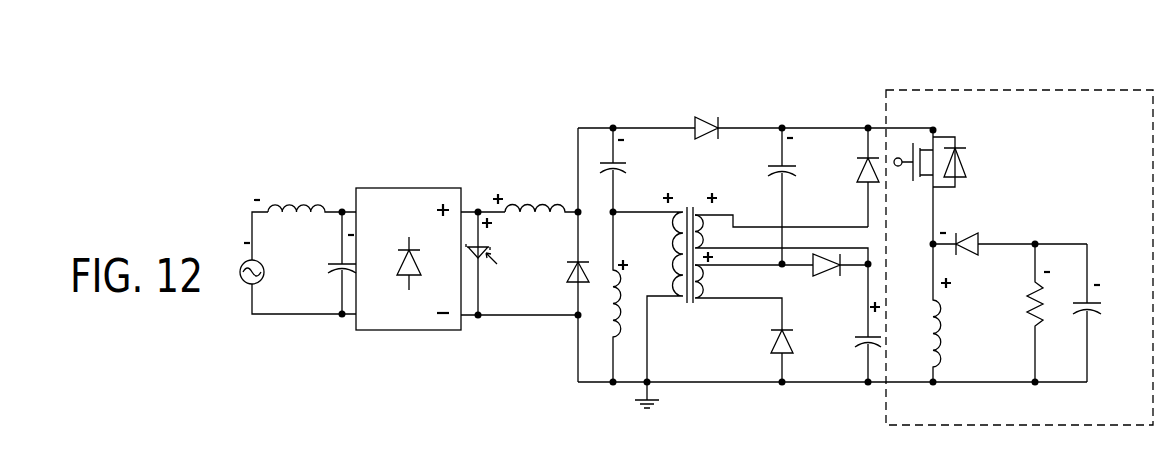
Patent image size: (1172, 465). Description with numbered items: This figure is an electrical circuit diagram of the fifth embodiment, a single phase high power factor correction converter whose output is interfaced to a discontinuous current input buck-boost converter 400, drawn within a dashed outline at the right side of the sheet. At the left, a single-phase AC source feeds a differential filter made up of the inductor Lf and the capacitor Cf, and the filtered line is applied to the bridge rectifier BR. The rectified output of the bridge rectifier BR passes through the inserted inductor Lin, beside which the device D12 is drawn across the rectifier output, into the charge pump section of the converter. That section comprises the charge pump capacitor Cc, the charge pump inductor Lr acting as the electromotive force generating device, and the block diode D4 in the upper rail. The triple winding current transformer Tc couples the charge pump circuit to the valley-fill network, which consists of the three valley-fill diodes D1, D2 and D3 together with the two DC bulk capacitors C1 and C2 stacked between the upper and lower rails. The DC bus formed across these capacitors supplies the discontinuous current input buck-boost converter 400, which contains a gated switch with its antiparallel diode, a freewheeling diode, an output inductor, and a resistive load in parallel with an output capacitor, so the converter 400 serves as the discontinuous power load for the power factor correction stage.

The discontinuous current input buck-boost converter 400 is at (1003, 90).
The inductor Lf is at (312, 189).
The capacitor Cf is at (326, 263).
The bridge rectifier BR is at (403, 331).
The inserted inductor Lin is at (541, 188).
The zener diode D12 is at (506, 263).
The charge pump inductor Lr is at (597, 255).
The charge pump capacitor Cc is at (628, 170).
The block diode D4 is at (708, 112).
The triple winding current transformer Tc is at (740, 287).
The DC bulk capacitor C1 is at (766, 196).
The valley-fill diode D2 is at (850, 177).
The valley-fill diode D3 is at (840, 282).
The valley-fill diode D1 is at (762, 355).
The DC bulk capacitor C2 is at (849, 323).